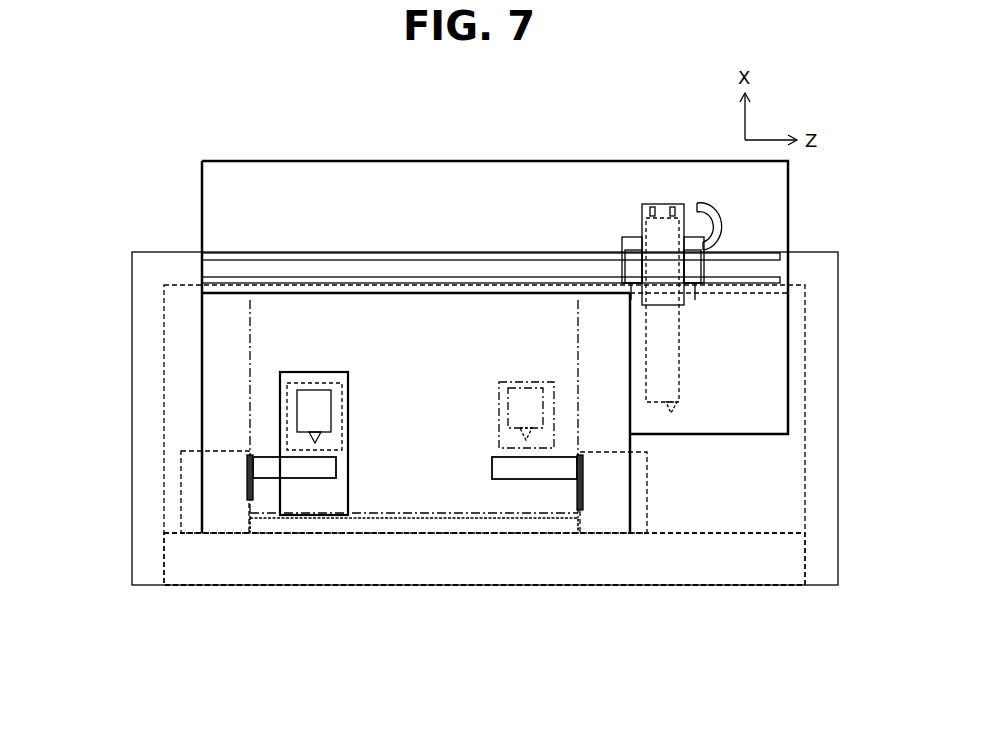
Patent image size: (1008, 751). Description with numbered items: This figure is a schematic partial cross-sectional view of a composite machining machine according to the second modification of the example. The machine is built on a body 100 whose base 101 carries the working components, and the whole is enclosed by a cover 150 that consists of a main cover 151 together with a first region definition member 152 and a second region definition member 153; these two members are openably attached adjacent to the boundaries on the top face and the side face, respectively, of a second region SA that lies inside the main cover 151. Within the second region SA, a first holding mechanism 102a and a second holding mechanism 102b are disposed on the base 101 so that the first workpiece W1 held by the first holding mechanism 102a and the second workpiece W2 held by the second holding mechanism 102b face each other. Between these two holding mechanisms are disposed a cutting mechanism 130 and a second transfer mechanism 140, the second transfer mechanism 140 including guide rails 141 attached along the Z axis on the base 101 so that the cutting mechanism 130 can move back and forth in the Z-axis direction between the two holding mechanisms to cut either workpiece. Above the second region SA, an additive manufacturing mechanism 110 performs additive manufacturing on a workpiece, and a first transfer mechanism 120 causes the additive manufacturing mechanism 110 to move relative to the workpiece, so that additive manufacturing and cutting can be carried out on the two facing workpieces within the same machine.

The body 100 is at (440, 590).
The base 101 is at (538, 560).
The first holding mechanism 102a is at (192, 477).
The second holding mechanism 102b is at (635, 493).
The additive manufacturing mechanism 110 is at (685, 410).
The first transfer mechanism 120 is at (160, 247).
The cutting mechanism 130 is at (316, 368).
The second transfer mechanism 140 is at (357, 412).
The guide rails 141 is at (375, 525).
The cover 150 is at (384, 150).
The main cover 151 is at (523, 160).
The first region definition member 152 is at (478, 296).
The second region definition member 153 is at (628, 341).
The second region SA is at (255, 361).
The first workpiece W1 is at (322, 468).
The second workpiece W2 is at (500, 468).